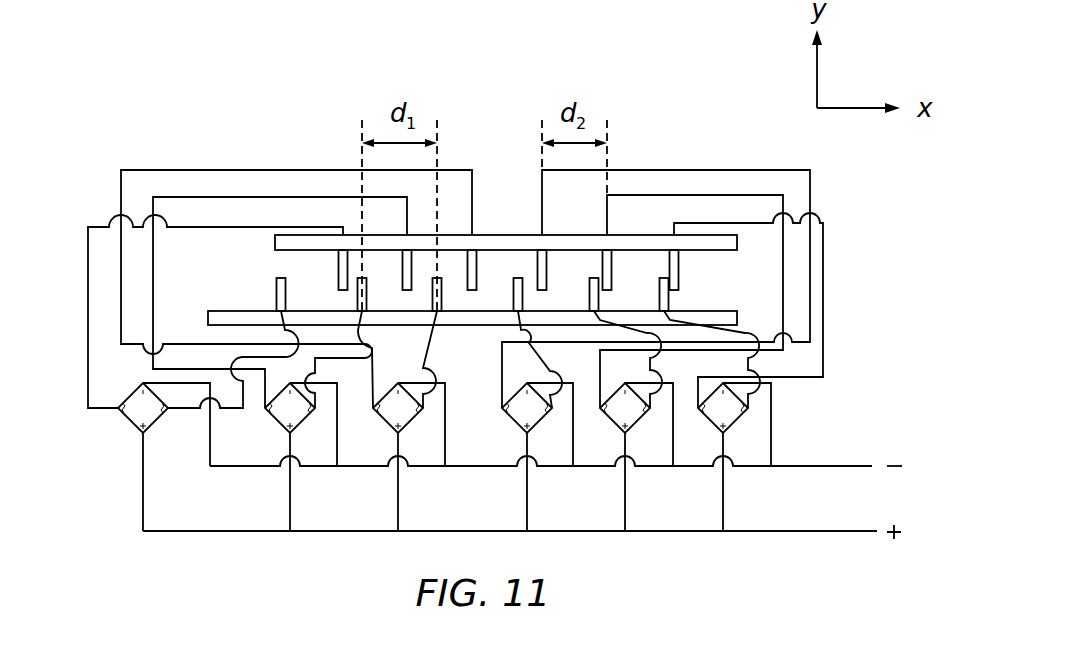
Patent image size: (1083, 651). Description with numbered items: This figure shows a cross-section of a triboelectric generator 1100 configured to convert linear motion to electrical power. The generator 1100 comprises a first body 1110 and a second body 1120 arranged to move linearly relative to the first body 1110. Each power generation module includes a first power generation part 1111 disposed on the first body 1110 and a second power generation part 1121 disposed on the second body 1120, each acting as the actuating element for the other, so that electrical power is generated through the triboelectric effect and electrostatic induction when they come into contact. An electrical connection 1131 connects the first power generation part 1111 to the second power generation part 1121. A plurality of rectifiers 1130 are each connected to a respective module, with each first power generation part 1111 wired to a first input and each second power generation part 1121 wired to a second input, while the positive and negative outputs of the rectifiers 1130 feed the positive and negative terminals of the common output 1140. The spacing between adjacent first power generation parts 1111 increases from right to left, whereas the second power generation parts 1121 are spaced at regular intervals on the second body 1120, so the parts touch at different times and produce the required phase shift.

The triboelectric generator 1100 is at (593, 68).
The first body 1110 is at (737, 318).
The first power generation part 1111 is at (274, 296).
The second body 1120 is at (737, 243).
The second power generation part 1121 is at (336, 273).
The rectifier 1130 is at (137, 430).
The electrical connection 1131 is at (88, 262).
The common output 1140 is at (866, 531).